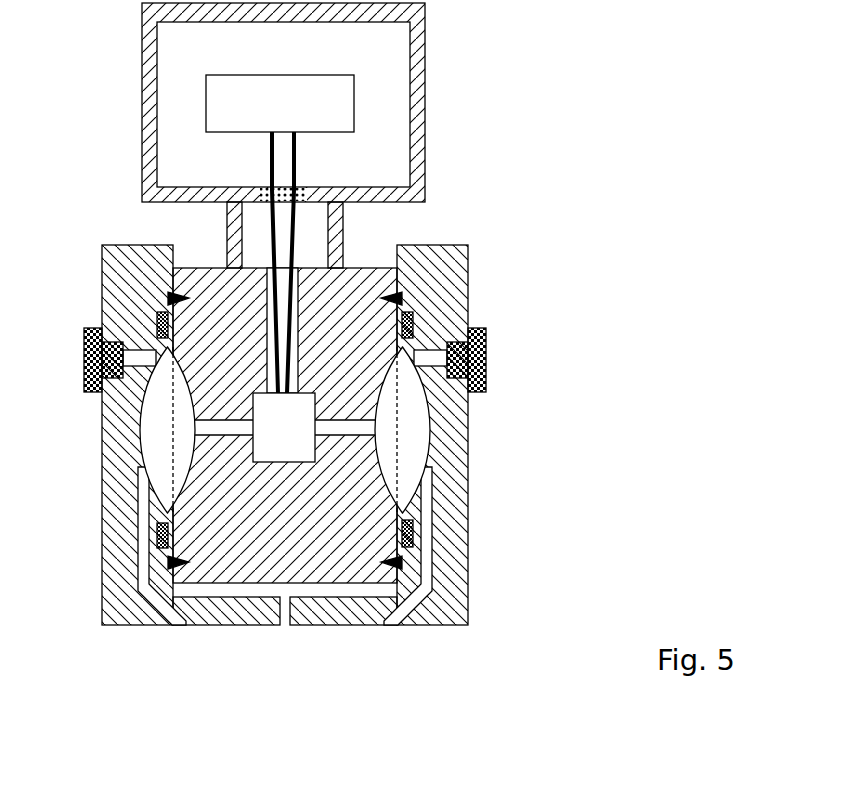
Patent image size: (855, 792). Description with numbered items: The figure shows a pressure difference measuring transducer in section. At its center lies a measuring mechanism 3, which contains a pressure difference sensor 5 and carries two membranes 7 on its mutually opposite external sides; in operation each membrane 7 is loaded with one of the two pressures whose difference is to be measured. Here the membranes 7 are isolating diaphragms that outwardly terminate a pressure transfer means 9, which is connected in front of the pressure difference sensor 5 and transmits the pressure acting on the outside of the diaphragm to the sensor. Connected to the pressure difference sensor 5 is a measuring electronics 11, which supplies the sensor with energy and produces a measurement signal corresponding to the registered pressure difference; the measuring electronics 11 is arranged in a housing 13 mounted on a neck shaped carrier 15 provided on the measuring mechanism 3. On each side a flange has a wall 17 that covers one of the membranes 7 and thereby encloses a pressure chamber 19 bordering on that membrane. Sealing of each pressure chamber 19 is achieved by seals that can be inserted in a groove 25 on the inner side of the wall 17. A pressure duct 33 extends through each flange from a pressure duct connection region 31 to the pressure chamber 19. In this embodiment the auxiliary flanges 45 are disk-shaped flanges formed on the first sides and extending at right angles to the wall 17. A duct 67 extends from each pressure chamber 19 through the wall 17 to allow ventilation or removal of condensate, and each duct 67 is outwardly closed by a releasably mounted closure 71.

The measuring mechanism 3 is at (230, 328).
The pressure difference sensor 5 is at (284, 427).
The membrane 7 is at (168, 458).
The pressure transfer means 9 is at (372, 440).
The measuring electronics 11 is at (280, 103).
The housing 13 is at (156, 133).
The neck shaped carrier 15 is at (338, 262).
The wall 17 is at (108, 448).
The pressure chamber 19 is at (145, 417).
The groove 25 is at (160, 316).
The pressure duct connection region 31 is at (177, 627).
The pressure duct 33 is at (145, 578).
The auxiliary flange 45 is at (232, 625).
The duct 67 is at (143, 360).
The closure 71 is at (100, 350).